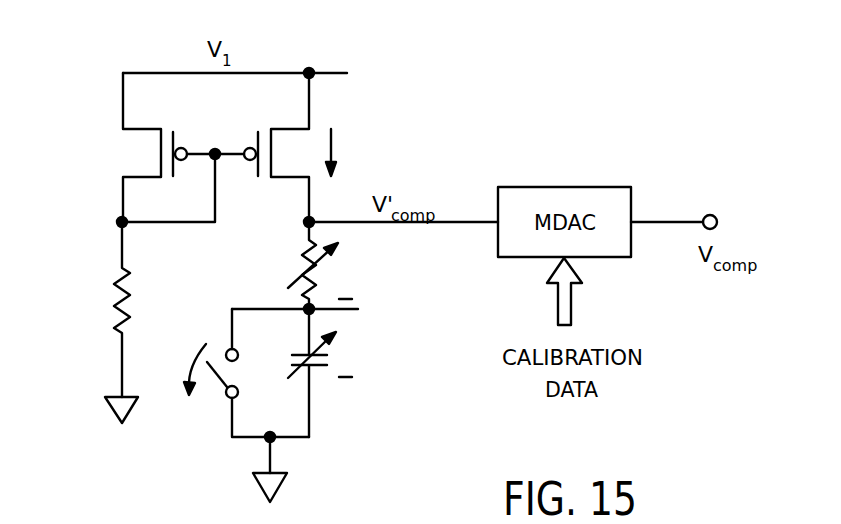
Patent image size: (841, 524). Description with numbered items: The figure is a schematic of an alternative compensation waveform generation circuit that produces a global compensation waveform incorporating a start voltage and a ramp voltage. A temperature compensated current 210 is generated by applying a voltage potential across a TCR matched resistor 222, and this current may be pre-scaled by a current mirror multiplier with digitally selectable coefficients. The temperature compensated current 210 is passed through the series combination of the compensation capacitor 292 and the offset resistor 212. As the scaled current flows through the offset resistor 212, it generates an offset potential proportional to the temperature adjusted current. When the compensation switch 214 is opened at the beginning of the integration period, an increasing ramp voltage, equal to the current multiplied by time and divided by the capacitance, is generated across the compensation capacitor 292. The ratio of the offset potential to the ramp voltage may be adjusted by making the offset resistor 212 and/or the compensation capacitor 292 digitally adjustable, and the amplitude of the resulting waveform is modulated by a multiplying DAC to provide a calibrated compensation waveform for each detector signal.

The temperature compensated current Itemp 210 is at (340, 133).
The Roffset 212 is at (305, 263).
The switch Scomp 214 is at (213, 372).
The resistor R1 222 is at (123, 273).
The Ccomp 292 is at (317, 368).